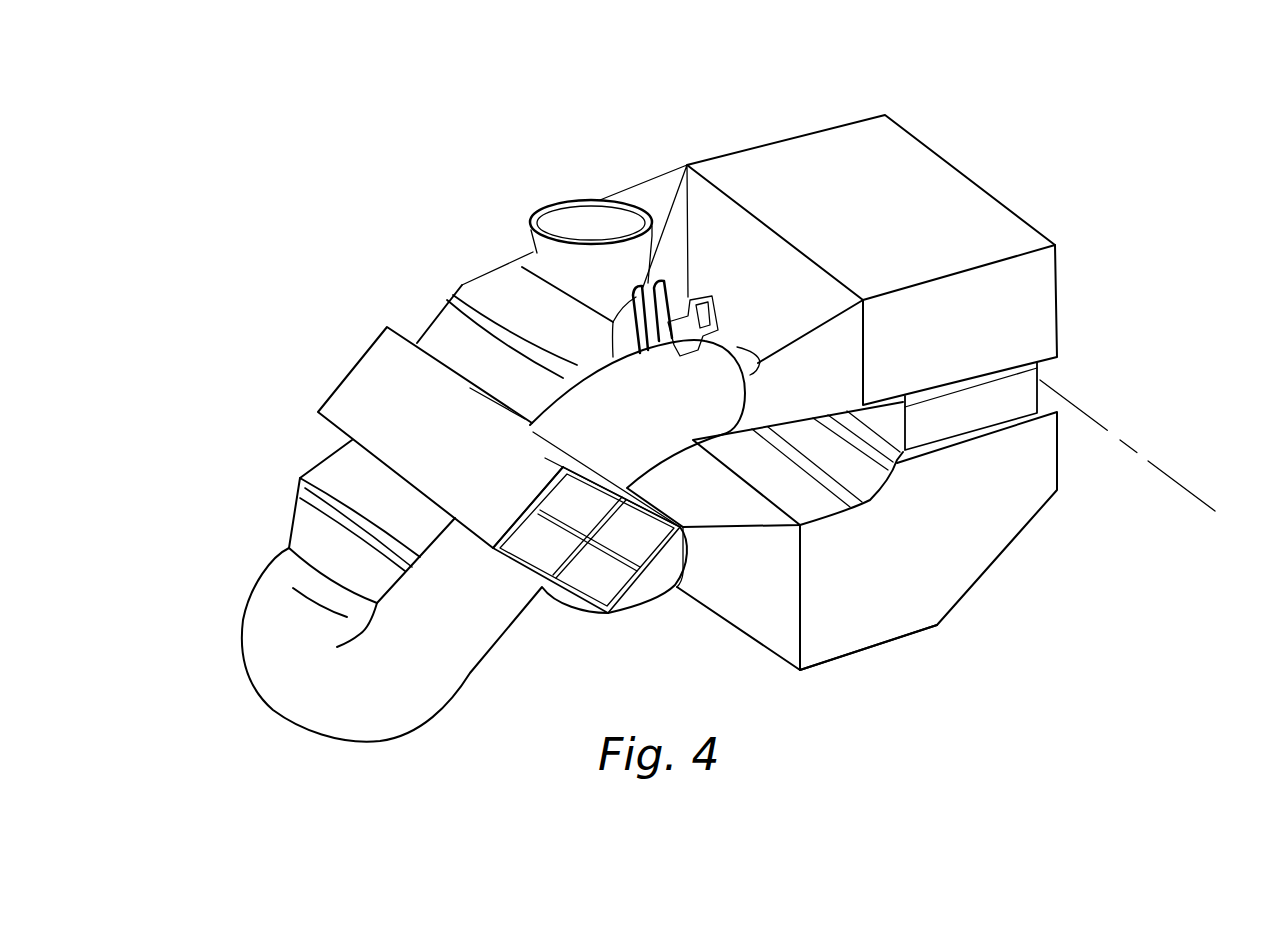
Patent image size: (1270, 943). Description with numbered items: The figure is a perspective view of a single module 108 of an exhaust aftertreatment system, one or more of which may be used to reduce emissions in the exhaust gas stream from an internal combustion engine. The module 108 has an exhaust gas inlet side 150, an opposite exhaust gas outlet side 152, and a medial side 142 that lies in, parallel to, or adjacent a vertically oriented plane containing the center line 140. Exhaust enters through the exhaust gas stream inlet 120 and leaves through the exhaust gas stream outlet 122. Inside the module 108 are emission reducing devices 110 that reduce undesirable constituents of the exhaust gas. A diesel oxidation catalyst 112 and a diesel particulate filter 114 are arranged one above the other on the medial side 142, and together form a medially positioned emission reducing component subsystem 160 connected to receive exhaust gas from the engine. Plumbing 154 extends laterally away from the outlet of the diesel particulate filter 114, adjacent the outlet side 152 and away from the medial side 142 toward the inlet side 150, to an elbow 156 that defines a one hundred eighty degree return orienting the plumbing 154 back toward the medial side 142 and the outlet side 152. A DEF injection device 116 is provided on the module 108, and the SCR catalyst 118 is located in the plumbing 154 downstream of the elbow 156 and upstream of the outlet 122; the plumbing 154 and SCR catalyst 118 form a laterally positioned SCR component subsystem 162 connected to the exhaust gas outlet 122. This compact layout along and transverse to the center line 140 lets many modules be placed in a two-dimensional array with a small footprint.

The module 108 is at (317, 155).
The emission reducing devices 110 is at (1064, 378).
The diesel oxidation catalyst (DOC) 112 is at (966, 518).
The diesel particulate filter (DPF) 114 is at (991, 410).
The DEF injection device 116 is at (707, 285).
The selective catalytic reduction (SCR) catalyst 118 is at (362, 477).
The exhaust gas stream inlet 120 is at (862, 662).
The exhaust gas stream outlet 122 is at (524, 224).
The center line 140 is at (1176, 478).
The medial side 142 is at (1060, 286).
The exhaust gas inlet side 150 is at (905, 638).
The exhaust gas outlet side 152 is at (906, 182).
The plumbing 154 is at (392, 747).
The elbow 156 is at (283, 718).
The medially positioned emission reducing component subsystem 160 is at (1014, 175).
The laterally positioned SCR component subsystem 162 is at (336, 350).